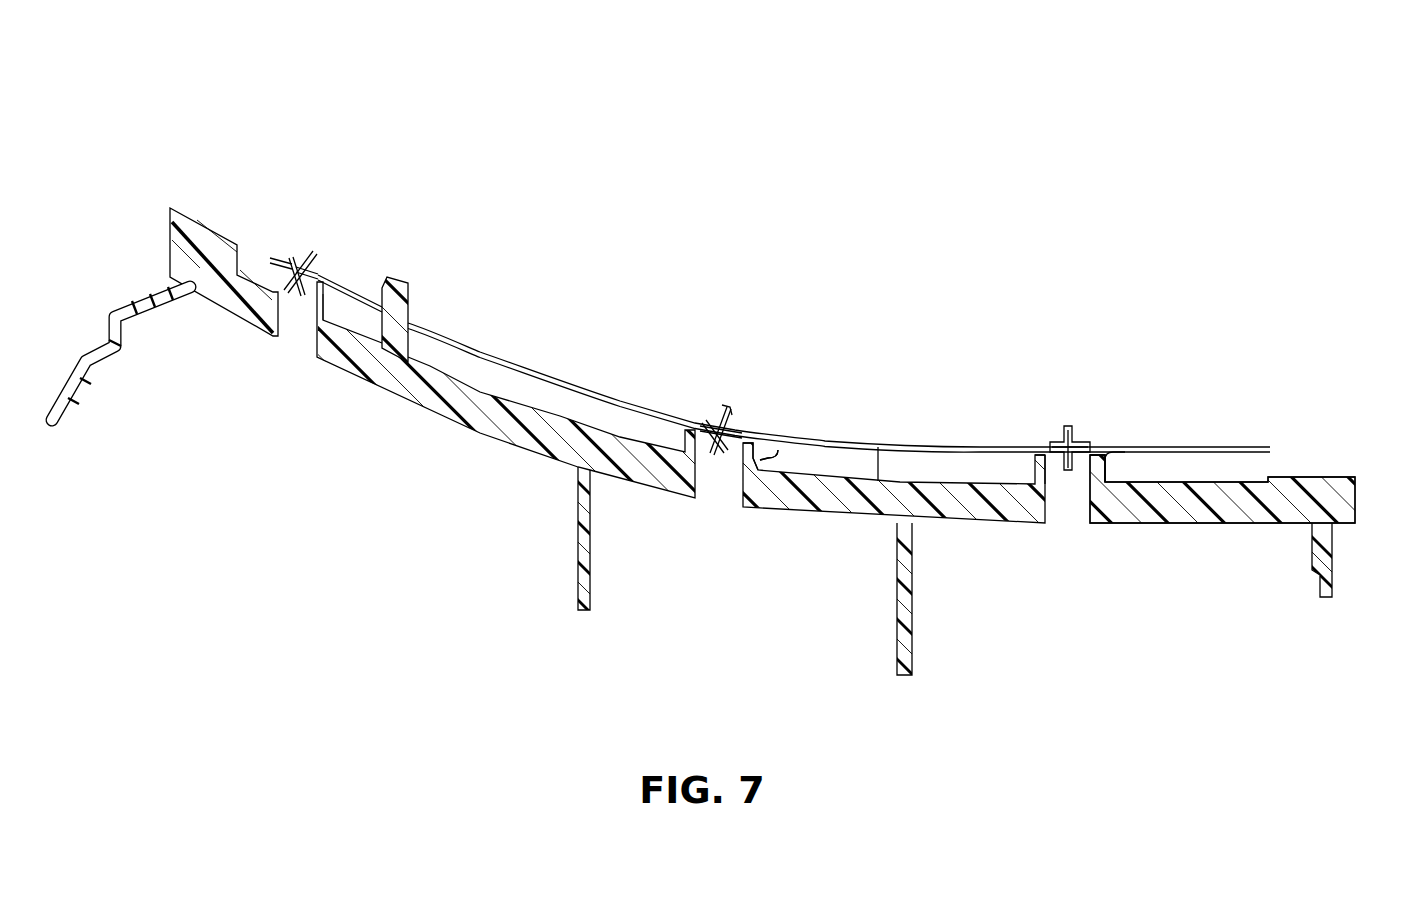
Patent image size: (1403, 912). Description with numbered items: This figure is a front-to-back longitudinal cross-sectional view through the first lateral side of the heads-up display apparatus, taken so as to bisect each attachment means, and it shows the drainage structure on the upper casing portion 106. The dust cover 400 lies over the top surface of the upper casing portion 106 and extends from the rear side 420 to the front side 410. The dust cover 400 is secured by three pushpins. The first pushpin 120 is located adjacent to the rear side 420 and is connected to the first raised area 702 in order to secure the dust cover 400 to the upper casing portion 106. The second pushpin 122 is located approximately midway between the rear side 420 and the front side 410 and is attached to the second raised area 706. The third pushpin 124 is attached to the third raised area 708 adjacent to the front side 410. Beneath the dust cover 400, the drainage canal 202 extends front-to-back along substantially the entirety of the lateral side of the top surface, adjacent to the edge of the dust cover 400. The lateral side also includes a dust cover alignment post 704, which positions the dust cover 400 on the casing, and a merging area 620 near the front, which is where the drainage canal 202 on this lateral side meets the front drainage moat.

The rear side 420 is at (248, 108).
The front side 410 is at (1259, 303).
The merging area 620 is at (1293, 442).
The first raised area 702 is at (273, 267).
The first pushpin 120 is at (310, 255).
The second pushpin 122 is at (720, 406).
The third pushpin 124 is at (1066, 424).
The upper casing portion 106 is at (396, 400).
The dust cover 400 is at (340, 288).
The drainage canal 202 is at (513, 400).
The dust cover alignment post 704 is at (415, 290).
The second raised area 706 is at (778, 450).
The third raised area 708 is at (1098, 466).